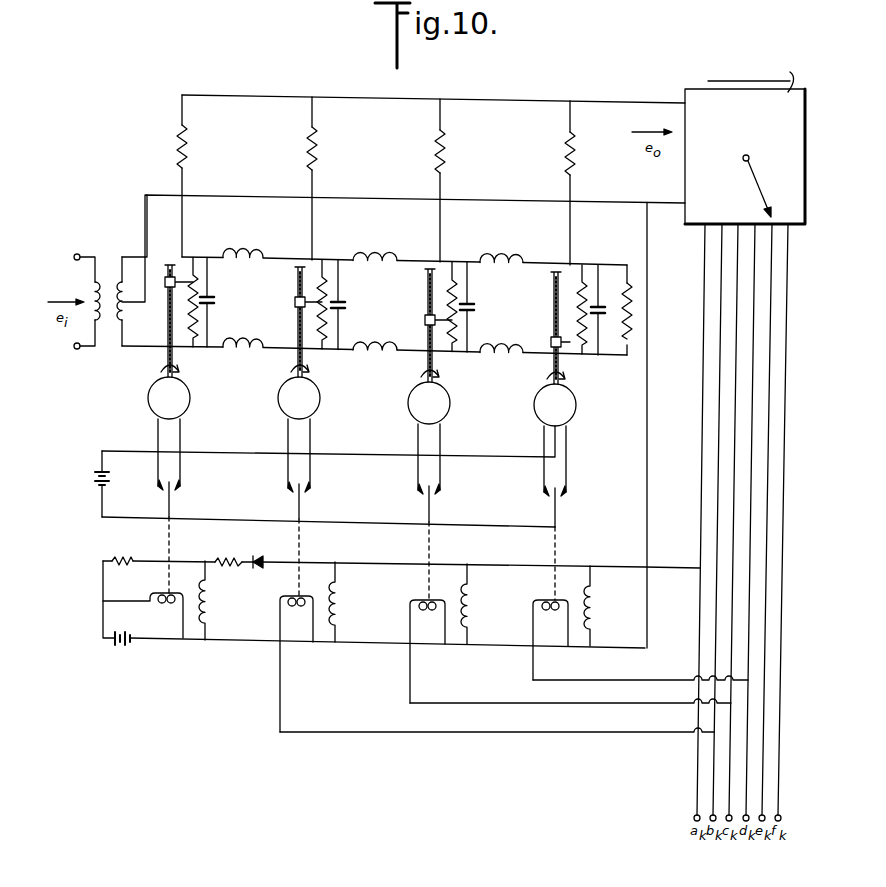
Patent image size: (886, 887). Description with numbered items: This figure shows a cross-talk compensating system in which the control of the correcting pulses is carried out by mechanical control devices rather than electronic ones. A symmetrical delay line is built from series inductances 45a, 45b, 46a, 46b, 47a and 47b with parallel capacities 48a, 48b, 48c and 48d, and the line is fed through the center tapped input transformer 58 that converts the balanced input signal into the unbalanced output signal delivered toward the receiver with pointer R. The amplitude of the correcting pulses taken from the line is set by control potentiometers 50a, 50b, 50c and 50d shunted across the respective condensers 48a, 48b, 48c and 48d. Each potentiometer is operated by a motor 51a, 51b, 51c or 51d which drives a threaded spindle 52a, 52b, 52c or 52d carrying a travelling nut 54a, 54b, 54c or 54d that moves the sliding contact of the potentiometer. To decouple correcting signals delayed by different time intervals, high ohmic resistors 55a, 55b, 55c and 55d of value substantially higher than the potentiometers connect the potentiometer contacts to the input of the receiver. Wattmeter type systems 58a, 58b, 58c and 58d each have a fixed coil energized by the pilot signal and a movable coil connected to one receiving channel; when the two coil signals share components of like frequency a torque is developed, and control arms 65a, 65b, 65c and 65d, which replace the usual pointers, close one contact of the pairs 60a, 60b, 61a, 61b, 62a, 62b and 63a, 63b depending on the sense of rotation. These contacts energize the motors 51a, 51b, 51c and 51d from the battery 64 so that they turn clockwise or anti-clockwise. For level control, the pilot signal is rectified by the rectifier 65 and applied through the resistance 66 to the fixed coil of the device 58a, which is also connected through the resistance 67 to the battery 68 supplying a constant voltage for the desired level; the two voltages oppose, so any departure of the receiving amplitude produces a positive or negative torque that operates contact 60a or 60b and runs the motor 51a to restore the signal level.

The receiver pointer R is at (764, 170).
The series inductance 45a is at (252, 244).
The series inductance 45b is at (249, 343).
The series inductance 46a is at (378, 256).
The series inductance 46b is at (378, 345).
The series inductance 47a is at (506, 258).
The series inductance 47b is at (503, 348).
The parallel capacity 48a is at (218, 304).
The parallel capacity 48b is at (348, 308).
The parallel capacity 48c is at (477, 310).
The parallel capacity 48d is at (612, 300).
The control potentiometer 50a is at (200, 275).
The control potentiometer 50b is at (325, 278).
The control potentiometer 50c is at (457, 282).
The control potentiometer 50d is at (585, 282).
The motor 51a is at (181, 406).
The motor 51b is at (311, 406).
The motor 51c is at (441, 411).
The motor 51d is at (567, 413).
The threaded shaft or spindle 52a is at (168, 322).
The threaded shaft or spindle 52b is at (296, 305).
The threaded shaft or spindle 52c is at (425, 318).
The threaded shaft or spindle 52d is at (552, 322).
The travelling nut 54a is at (167, 278).
The travelling nut 54b is at (298, 298).
The travelling nut 54c is at (426, 325).
The travelling nut 54d is at (552, 348).
The high ohmic resistor 55a is at (188, 148).
The high ohmic resistor 55b is at (318, 152).
The high ohmic resistor 55c is at (446, 154).
The high ohmic resistor 55d is at (576, 157).
The input transformer 58 is at (110, 270).
The wattmeter type system 58a is at (190, 636).
The wattmeter type system 58b is at (322, 638).
The wattmeter type system 58c is at (452, 640).
The wattmeter type system 58d is at (578, 642).
The contact 60a is at (157, 483).
The contact 60b is at (184, 484).
The contact 61a is at (287, 485).
The contact 61b is at (314, 486).
The contact 62a is at (417, 487).
The contact 62b is at (444, 488).
The contact 63a is at (543, 489).
The contact 63b is at (570, 490).
The battery or current source 64 is at (90, 482).
The rectifier 65 is at (258, 556).
The control arm 65a is at (172, 508).
The control arm 65b is at (302, 510).
The control arm 65c is at (432, 513).
The control arm 65d is at (558, 517).
The resistance 66 is at (236, 549).
The resistance 67 is at (130, 558).
The battery 68 is at (140, 624).